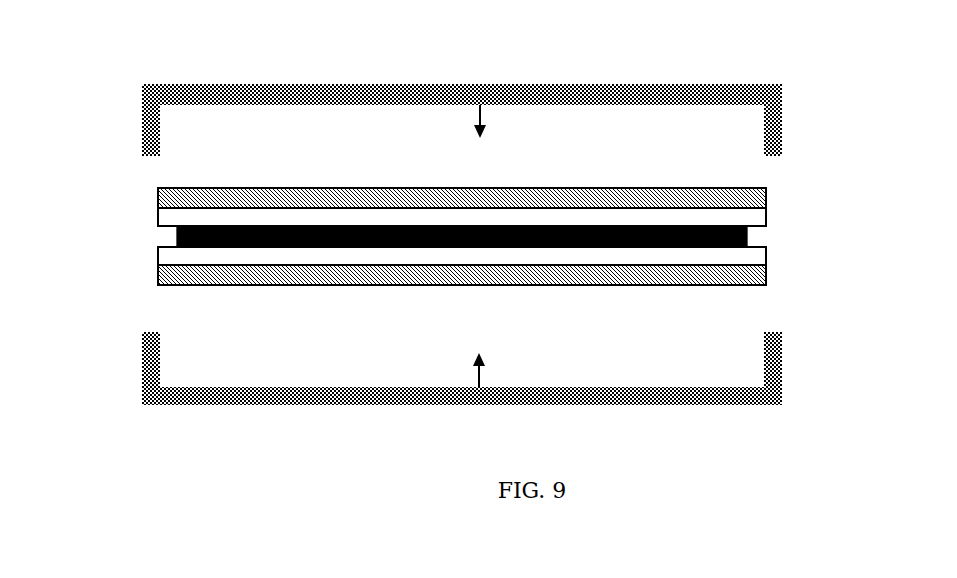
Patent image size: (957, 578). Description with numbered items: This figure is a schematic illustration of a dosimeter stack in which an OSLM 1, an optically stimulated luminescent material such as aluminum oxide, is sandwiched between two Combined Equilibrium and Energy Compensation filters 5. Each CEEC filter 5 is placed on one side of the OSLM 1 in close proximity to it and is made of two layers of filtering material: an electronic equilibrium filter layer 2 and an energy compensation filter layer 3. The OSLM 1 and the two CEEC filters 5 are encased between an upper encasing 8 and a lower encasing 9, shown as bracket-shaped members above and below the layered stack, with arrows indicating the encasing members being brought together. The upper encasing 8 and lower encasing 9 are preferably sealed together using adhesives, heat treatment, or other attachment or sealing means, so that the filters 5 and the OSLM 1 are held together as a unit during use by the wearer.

The OSLM 1 is at (747, 244).
The equilibrium filter layer 2 is at (158, 227).
The energy compensation filter layer 3 is at (158, 190).
The Combined Equilibrium and Energy Compensation (CEEC) filter 5 is at (766, 193).
The upper encasing 8 is at (657, 87).
The lower encasing 9 is at (693, 408).